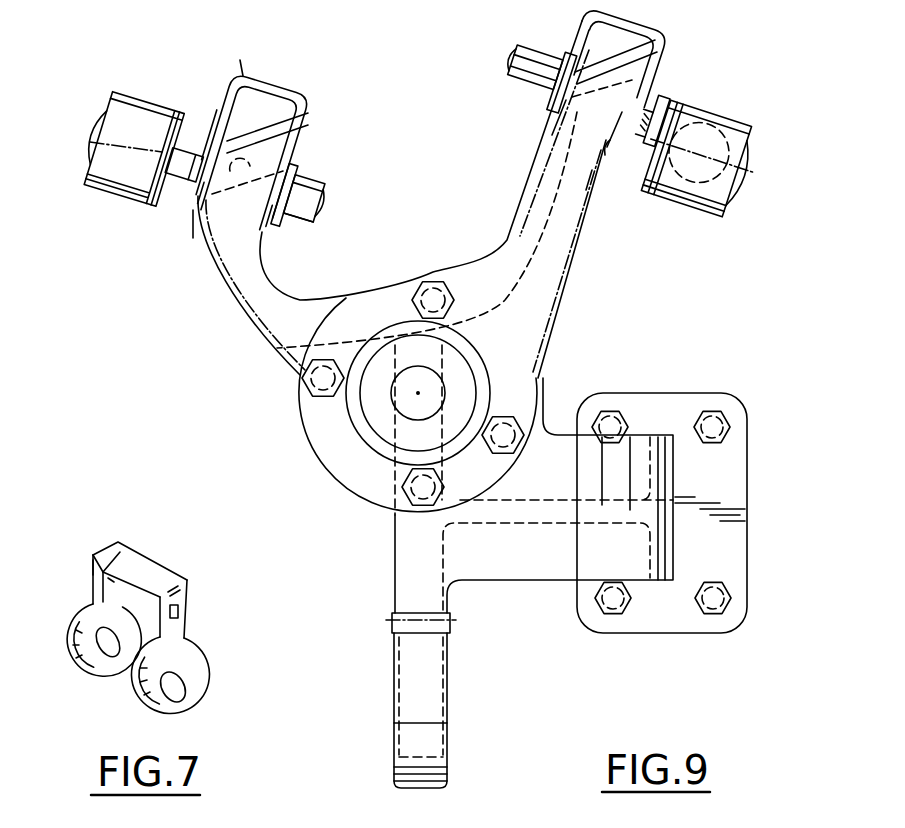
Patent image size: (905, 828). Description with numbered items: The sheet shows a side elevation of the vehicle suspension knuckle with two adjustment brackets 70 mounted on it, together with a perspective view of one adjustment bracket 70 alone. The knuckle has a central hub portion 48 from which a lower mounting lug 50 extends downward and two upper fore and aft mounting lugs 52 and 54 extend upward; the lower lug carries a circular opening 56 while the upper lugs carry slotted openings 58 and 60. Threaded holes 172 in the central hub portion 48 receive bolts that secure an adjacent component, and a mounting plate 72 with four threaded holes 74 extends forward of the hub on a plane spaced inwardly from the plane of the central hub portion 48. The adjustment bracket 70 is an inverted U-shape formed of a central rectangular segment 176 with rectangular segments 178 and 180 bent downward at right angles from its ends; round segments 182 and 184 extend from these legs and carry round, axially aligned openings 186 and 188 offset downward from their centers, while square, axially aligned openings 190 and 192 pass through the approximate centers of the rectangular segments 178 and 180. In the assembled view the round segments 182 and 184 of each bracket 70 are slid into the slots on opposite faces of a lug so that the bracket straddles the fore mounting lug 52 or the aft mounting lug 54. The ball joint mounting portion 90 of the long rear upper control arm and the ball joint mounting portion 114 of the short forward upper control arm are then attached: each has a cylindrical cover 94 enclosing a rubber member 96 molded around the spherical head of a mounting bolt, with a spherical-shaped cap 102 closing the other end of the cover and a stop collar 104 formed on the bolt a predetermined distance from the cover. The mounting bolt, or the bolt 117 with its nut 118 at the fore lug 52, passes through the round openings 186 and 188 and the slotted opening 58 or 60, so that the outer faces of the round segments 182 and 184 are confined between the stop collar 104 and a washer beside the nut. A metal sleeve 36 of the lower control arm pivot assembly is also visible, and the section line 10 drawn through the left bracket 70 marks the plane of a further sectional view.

In FIG. 9, the section line 10- 10 is at (230, 61).
In FIG. 9, the metal sleeve 36 is at (340, 194).
In FIG. 9, the central hub portion 48 is at (328, 468).
In FIG. 9, the lower mounting lug 50 is at (452, 766).
In FIG. 9, the fore mounting lug 52 is at (608, 72).
In FIG. 9, the aft mounting lug 54 is at (300, 128).
In FIG. 9, the circular opening 56 is at (428, 642).
In FIG. 9, the slotted opening 58 is at (415, 199).
In FIG. 9, the slotted opening 60 is at (253, 160).
In FIG. 9, the adjustment bracket 70 is at (295, 79).
In FIG. 7, the adjustment bracket 70 is at (146, 604).
In FIG. 9, the mounting plate 72 is at (678, 394).
In FIG. 9, the threaded holes 74 is at (735, 418).
In FIG. 9, the mounting portion 90 is at (120, 68).
In FIG. 9, the cylindrical cover 94 is at (152, 110).
In FIG. 9, the rubber member 96 is at (300, 222).
In FIG. 9, the spherical-shaped cap 102 is at (93, 144).
In FIG. 9, the stop collar 104 is at (240, 78).
In FIG. 9, the ball joint mounting portion 114 is at (778, 112).
In FIG. 9, the bolt 117 is at (662, 100).
In FIG. 9, the nut 118 is at (522, 104).
In FIG. 9, the threaded holes 172 is at (440, 280).
In FIG. 7, the central rectangular segment 176 is at (148, 550).
In FIG. 7, the rectangular segment 178 is at (94, 570).
In FIG. 7, the rectangular segment 180 is at (182, 600).
In FIG. 9, the round segment 182 is at (199, 225).
In FIG. 7, the round segment 182 is at (82, 631).
In FIG. 9, the round segment 184 is at (268, 240).
In FIG. 7, the round segment 184 is at (199, 639).
In FIG. 7, the round opening 186 is at (103, 658).
In FIG. 7, the round opening 188 is at (185, 690).
In FIG. 7, the square opening 190 is at (114, 578).
In FIG. 7, the square opening 192 is at (180, 609).